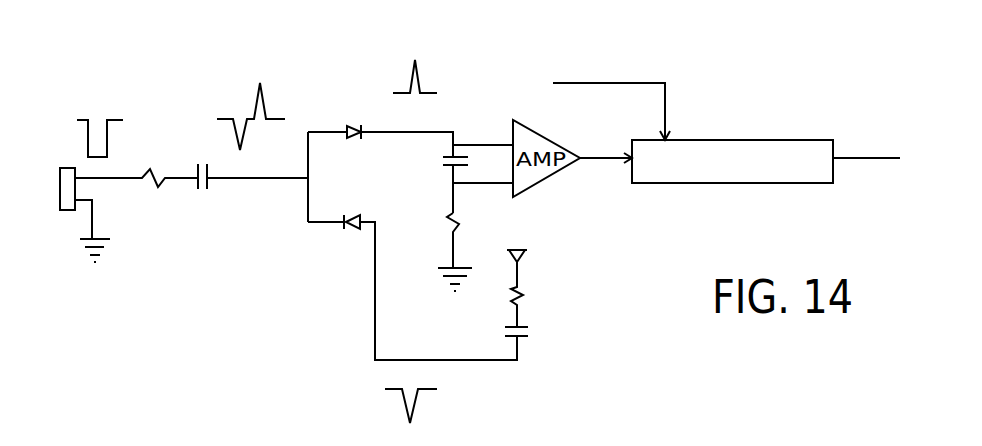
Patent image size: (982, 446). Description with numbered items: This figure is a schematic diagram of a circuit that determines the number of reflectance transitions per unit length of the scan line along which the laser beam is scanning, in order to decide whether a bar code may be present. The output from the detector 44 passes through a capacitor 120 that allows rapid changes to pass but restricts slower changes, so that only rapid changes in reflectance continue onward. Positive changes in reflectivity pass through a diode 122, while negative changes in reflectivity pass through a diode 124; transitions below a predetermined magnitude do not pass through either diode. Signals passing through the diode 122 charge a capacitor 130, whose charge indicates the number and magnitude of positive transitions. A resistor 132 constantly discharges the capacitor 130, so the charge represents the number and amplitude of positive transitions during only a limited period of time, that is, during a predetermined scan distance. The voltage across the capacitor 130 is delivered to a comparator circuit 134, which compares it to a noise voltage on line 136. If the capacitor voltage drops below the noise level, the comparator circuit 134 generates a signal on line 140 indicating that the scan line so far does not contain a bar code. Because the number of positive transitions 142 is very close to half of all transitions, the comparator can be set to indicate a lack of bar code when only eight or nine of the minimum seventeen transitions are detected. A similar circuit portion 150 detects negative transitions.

The detector 44 is at (60, 210).
The capacitor 120 is at (202, 162).
The diode 122 is at (353, 125).
The diode 124 is at (355, 232).
The capacitor 130 is at (443, 161).
The resistor 132 is at (443, 227).
The comparator circuit 134 is at (773, 140).
The line 136 is at (665, 110).
The line 140 is at (862, 160).
The positive transitions 142 is at (418, 73).
The circuit portion 150 is at (556, 321).